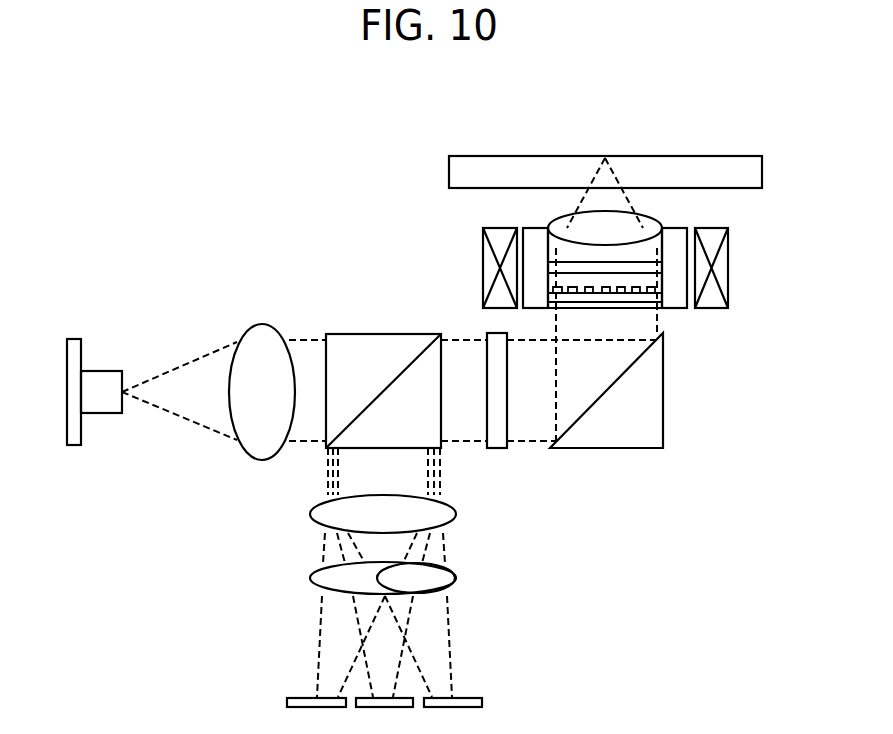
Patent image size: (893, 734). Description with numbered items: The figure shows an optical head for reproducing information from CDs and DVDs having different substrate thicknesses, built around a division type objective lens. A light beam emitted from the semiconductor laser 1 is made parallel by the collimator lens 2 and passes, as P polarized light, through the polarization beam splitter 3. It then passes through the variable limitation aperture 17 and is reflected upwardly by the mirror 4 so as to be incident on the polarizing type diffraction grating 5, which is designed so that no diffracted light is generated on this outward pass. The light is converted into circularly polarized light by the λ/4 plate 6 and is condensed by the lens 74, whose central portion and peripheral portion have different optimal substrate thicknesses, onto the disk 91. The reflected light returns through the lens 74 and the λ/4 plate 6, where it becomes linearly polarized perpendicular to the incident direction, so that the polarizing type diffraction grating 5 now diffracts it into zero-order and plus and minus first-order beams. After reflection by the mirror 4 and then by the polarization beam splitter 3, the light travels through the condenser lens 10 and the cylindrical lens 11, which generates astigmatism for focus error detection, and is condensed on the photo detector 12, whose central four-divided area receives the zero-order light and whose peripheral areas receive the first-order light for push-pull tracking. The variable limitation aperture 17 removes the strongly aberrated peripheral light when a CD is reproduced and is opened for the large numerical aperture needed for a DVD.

The semiconductor laser 1 is at (102, 371).
The collimator lens 2 is at (260, 324).
The polarization beam splitter 3 is at (333, 334).
The mirror 4 is at (663, 422).
The polarizing type diffraction grating 5 is at (650, 298).
The λ/4 plate 6 is at (647, 266).
The condenser lens 10 is at (457, 513).
The cylindrical lens 11 is at (457, 578).
The photo detector 12 is at (482, 700).
The variable limitation aperture 17 is at (492, 448).
The lens 74 is at (617, 228).
The optical disc 91 is at (470, 156).